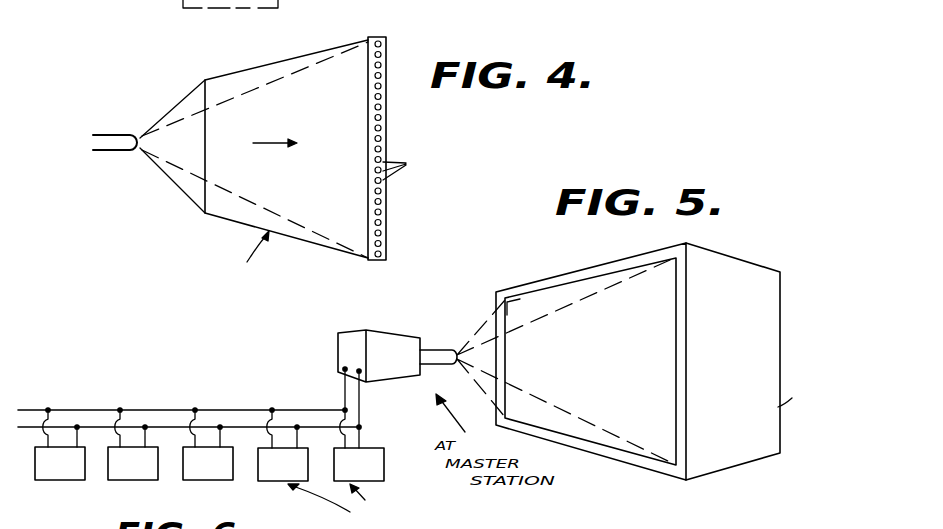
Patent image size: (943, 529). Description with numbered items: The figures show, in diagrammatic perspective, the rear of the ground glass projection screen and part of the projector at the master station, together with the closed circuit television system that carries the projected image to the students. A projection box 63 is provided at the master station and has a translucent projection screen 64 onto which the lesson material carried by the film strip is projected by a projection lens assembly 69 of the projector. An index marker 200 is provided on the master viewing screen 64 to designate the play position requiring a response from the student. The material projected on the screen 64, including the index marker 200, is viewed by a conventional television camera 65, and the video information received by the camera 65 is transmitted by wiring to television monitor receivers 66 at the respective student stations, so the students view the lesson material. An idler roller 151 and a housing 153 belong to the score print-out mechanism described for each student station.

In FIG. 4, the translucent projection screen 64 is at (268, 70).
In FIG. 5, the translucent projection screen 64 is at (562, 297).
In FIG. 4, the index marker 200 is at (357, 56).
In FIG. 5, the index marker 200 is at (515, 306).
In FIG. 4, the projection lens assembly 69 is at (112, 152).
In FIG. 4, the idler roller 151 is at (200, 0).
In FIG. 4, the housing 153 is at (207, 11).
In FIG. 5, the television camera 65 is at (388, 372).
In FIG. 5, the television monitor receivers 66 is at (45, 476).
In FIG. 5, the projection box 63 is at (737, 467).